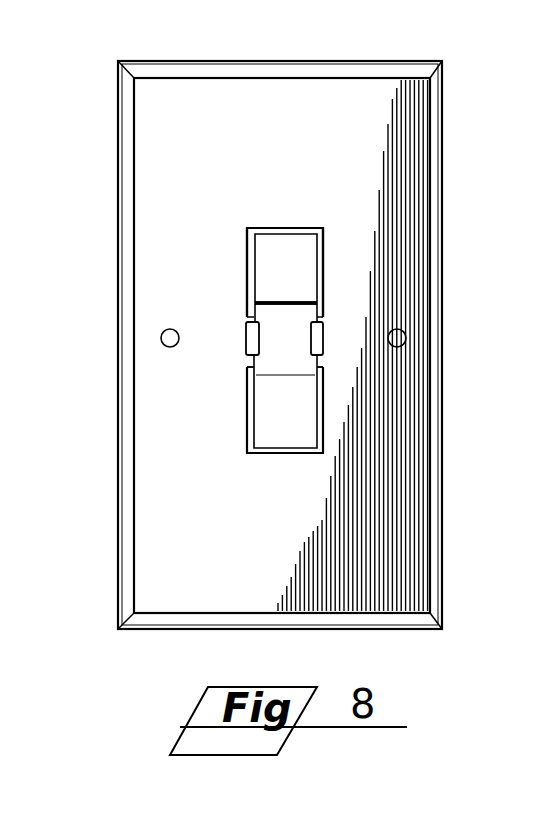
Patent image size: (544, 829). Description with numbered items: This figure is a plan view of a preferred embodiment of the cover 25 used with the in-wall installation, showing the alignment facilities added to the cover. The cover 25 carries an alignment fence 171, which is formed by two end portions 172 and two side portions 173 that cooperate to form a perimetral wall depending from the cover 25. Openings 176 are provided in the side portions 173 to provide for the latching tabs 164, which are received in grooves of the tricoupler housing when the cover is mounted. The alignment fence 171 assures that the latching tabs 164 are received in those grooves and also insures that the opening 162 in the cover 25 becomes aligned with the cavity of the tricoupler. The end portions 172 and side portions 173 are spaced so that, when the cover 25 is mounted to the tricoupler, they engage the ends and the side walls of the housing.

The cover 25 is at (436, 153).
The alignment fence 171 is at (247, 442).
The end portions 172 is at (283, 228).
The side portions 173 is at (248, 268).
The openings 176 is at (323, 317).
The latching tabs 164 is at (246, 338).
The opening 162 is at (287, 366).